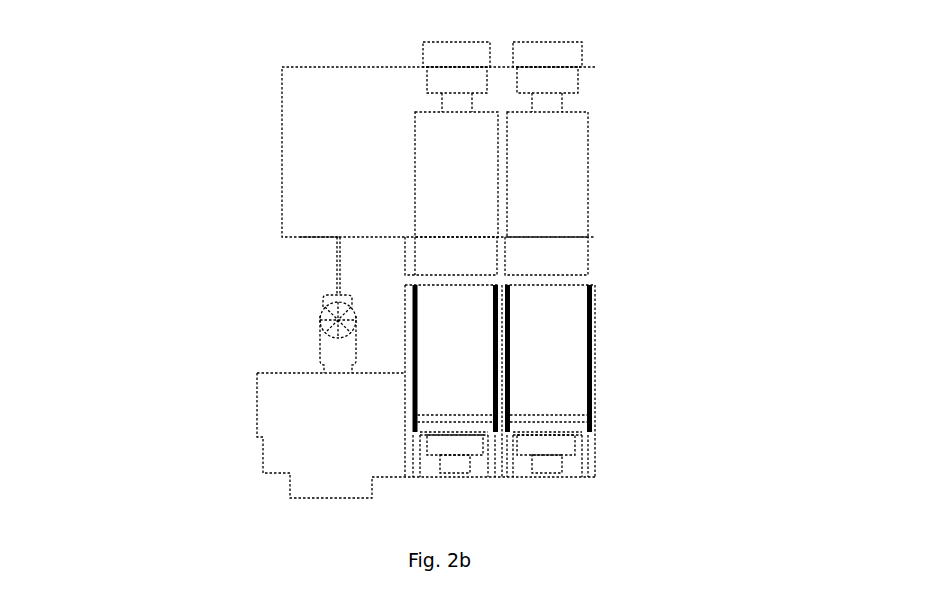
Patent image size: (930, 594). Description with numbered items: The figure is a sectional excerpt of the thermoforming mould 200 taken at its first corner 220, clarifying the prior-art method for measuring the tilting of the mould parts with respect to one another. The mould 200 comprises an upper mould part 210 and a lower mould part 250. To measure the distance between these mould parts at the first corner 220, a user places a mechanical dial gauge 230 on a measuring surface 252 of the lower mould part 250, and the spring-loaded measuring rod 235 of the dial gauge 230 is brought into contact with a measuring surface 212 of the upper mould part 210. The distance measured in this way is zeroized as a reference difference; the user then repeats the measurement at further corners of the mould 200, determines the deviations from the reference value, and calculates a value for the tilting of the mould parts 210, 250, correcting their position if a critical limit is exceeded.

The thermoforming mould 200 is at (158, 69).
The upper mould part 210 is at (327, 198).
The measuring surface 212 is at (313, 236).
The first corner 220 is at (232, 155).
The mechanical dial gauge 230 is at (332, 357).
The spring-loaded measuring rod 235 is at (337, 253).
The lower mould part 250 is at (298, 452).
The measuring surface 252 is at (273, 373).